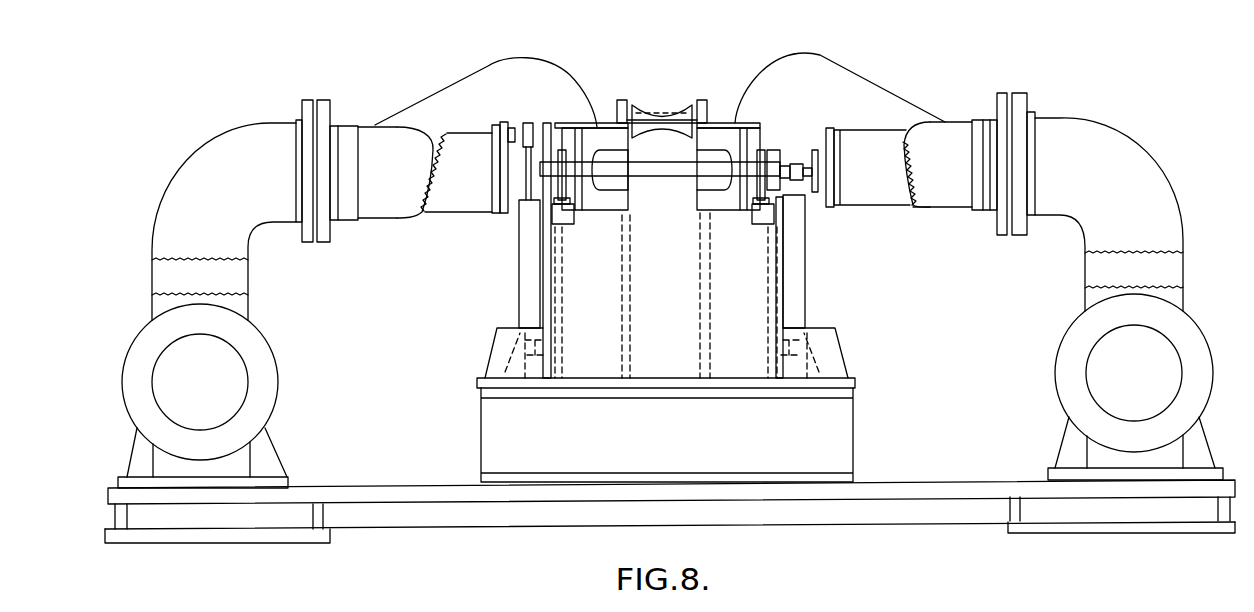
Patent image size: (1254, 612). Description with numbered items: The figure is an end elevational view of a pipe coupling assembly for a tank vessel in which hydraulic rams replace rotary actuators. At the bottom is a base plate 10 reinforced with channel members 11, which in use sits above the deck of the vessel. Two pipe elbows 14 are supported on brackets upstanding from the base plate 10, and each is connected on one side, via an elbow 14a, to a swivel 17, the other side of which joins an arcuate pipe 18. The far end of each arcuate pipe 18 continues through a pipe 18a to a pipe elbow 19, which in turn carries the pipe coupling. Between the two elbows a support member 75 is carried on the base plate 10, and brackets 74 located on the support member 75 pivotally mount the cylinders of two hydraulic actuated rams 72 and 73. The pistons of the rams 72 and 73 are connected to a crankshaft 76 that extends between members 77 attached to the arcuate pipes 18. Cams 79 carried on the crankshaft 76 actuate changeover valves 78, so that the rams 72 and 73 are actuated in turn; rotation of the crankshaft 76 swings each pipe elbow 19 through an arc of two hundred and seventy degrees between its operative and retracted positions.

The base plate 10 is at (373, 487).
The channel members 11 is at (127, 515).
The pipe elbow 14 is at (266, 380).
The elbow 14a is at (227, 226).
The swivel 17 is at (322, 108).
The arcuate pipe 18 is at (366, 184).
The pipe 18a is at (458, 125).
The pipe elbow 19 is at (470, 85).
The hydraulic actuated ram 72 is at (521, 240).
The hydraulic actuated ram 73 is at (797, 253).
The brackets 74 is at (500, 345).
The support member 75 is at (655, 448).
The crankshaft 76 is at (662, 174).
The members 77 is at (447, 197).
The changeover valves 78 is at (757, 224).
The cams 79 is at (561, 152).